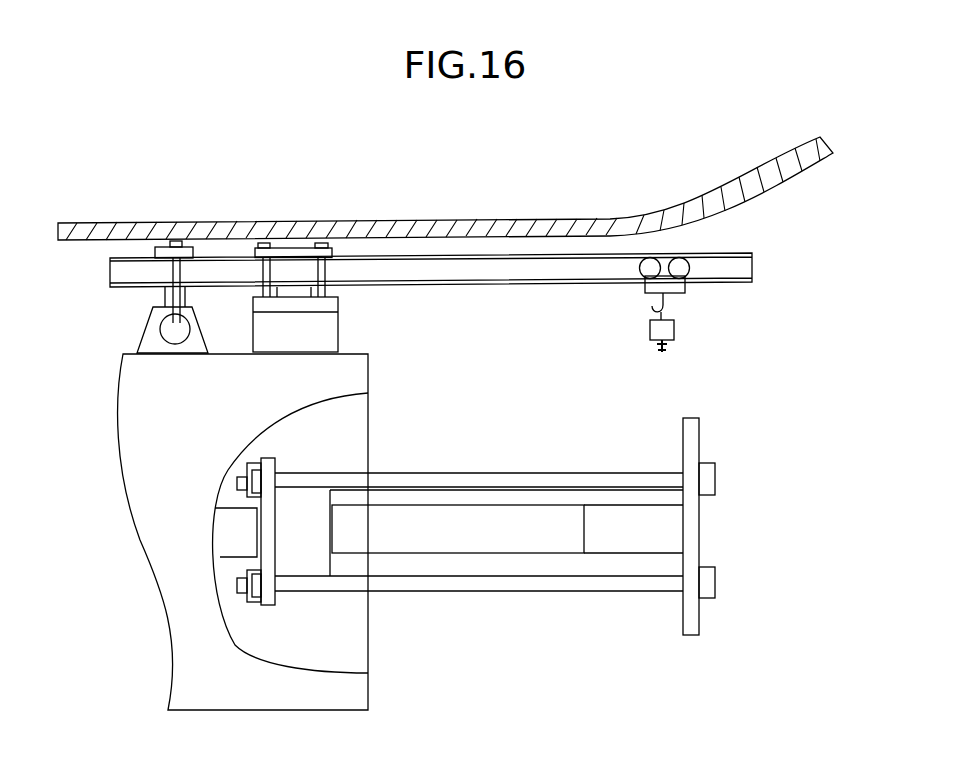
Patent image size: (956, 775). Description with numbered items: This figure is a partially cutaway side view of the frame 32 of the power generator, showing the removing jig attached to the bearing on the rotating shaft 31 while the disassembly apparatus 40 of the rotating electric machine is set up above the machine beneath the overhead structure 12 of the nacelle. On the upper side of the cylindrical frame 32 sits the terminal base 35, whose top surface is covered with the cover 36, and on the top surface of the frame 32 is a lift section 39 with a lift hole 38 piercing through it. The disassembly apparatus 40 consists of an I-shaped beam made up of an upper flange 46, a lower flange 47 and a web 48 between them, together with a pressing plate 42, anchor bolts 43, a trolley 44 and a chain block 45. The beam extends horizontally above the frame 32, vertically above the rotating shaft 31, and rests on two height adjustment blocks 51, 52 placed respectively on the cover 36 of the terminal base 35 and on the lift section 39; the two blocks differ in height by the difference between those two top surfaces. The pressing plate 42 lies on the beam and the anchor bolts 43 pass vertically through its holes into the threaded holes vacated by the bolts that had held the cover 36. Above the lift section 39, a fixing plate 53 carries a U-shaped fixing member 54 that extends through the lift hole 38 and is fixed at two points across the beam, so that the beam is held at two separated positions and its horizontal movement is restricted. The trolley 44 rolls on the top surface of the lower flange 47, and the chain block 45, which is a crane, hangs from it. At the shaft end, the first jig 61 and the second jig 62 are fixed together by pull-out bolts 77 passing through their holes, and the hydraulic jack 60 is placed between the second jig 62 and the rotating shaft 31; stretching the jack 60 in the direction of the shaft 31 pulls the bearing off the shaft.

The plate 12 is at (612, 219).
The rotating shaft 31 is at (553, 527).
The frame 32 is at (313, 538).
The terminal base 35 is at (277, 335).
The cover 36 is at (340, 303).
The lift hole 38 is at (152, 323).
The lift section 39 is at (153, 333).
The disassembly apparatus 40 is at (781, 401).
The pressing plate 42 is at (305, 247).
The anchor bolts 43 is at (334, 277).
The trolley 44 is at (683, 293).
The chain block 45 is at (677, 330).
The flange 46 is at (740, 251).
The lower flange 47 is at (737, 283).
The web 48 is at (735, 268).
The height adjustment block 51 is at (297, 290).
The height adjustment block 52 is at (208, 298).
The fixing plate 53 is at (153, 253).
The fixing member 54 is at (182, 274).
The hydraulic jack 60 is at (623, 527).
The first jig 61 is at (267, 458).
The second jig 62 is at (693, 627).
The pull-out bolts 77 is at (477, 471).